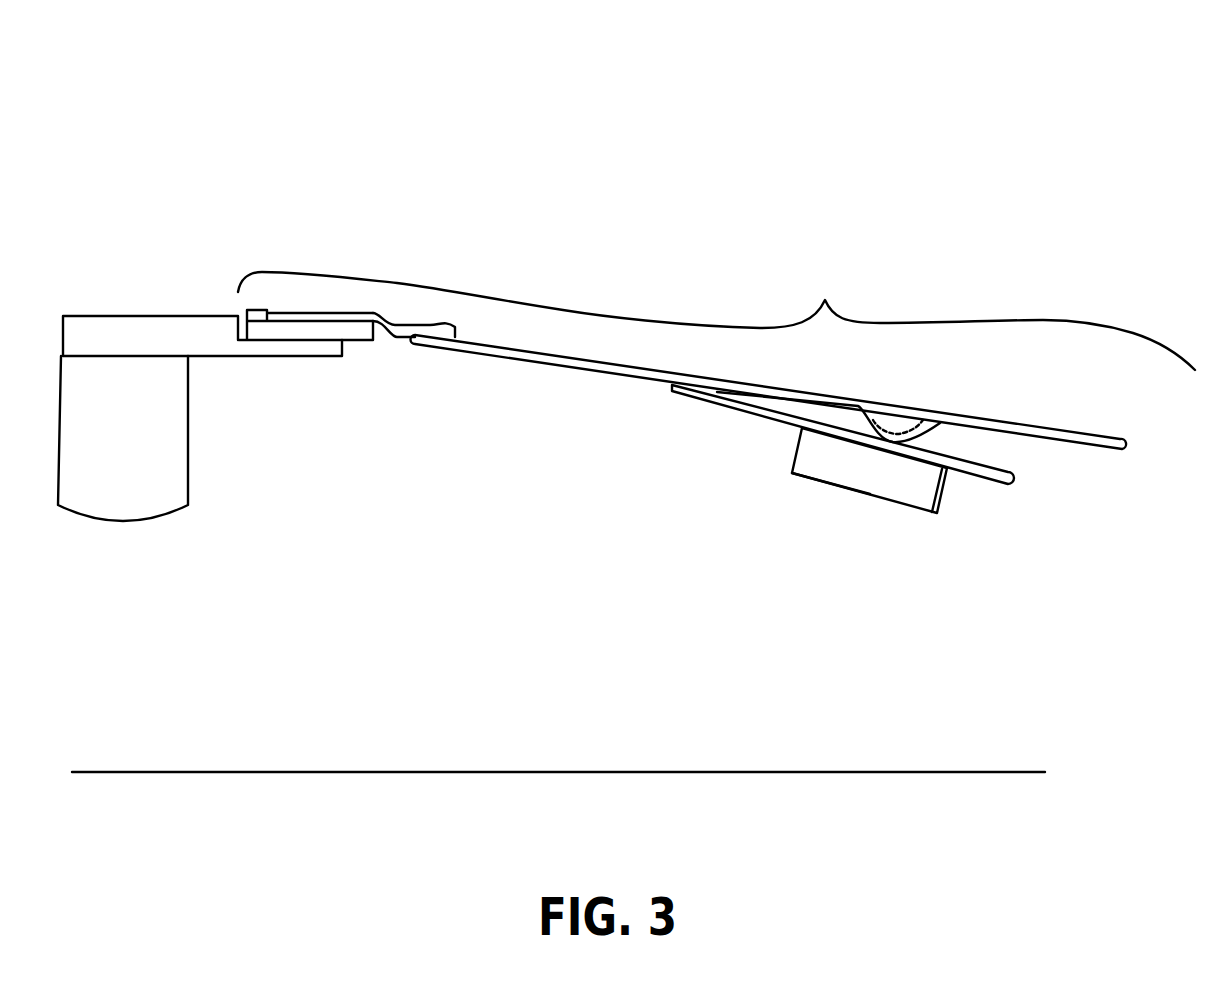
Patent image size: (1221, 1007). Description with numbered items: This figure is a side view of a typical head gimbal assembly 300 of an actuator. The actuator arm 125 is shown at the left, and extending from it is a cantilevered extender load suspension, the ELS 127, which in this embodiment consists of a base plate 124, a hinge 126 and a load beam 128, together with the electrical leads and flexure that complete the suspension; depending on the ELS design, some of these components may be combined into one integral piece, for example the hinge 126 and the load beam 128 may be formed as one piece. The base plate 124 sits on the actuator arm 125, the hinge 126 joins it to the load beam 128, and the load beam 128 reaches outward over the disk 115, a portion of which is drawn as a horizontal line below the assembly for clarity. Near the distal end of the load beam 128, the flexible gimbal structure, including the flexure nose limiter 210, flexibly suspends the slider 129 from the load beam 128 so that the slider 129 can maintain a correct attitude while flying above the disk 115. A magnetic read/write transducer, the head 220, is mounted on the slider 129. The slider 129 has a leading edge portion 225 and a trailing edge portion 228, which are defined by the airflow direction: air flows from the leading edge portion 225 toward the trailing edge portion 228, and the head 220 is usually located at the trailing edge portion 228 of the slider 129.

The head gimbal assembly 300 is at (555, 40).
The actuator arm 125 is at (203, 317).
The base plate 124 is at (312, 330).
The hinge 126 is at (397, 338).
The load beam 128 is at (598, 368).
The cantilevered ELS 127 is at (716, 320).
The flexure nose limiter 210 is at (953, 458).
The slider 129 is at (940, 507).
The head 220 is at (920, 480).
The trailing edge portion 228 is at (948, 542).
The leading edge portion 225 is at (797, 510).
The disk 115 is at (410, 770).